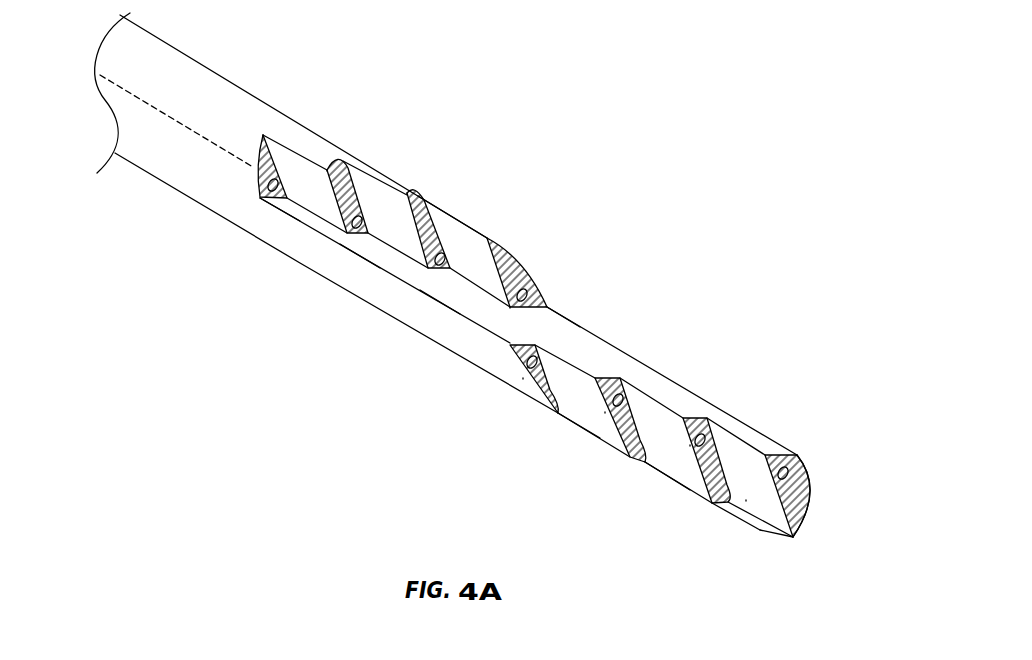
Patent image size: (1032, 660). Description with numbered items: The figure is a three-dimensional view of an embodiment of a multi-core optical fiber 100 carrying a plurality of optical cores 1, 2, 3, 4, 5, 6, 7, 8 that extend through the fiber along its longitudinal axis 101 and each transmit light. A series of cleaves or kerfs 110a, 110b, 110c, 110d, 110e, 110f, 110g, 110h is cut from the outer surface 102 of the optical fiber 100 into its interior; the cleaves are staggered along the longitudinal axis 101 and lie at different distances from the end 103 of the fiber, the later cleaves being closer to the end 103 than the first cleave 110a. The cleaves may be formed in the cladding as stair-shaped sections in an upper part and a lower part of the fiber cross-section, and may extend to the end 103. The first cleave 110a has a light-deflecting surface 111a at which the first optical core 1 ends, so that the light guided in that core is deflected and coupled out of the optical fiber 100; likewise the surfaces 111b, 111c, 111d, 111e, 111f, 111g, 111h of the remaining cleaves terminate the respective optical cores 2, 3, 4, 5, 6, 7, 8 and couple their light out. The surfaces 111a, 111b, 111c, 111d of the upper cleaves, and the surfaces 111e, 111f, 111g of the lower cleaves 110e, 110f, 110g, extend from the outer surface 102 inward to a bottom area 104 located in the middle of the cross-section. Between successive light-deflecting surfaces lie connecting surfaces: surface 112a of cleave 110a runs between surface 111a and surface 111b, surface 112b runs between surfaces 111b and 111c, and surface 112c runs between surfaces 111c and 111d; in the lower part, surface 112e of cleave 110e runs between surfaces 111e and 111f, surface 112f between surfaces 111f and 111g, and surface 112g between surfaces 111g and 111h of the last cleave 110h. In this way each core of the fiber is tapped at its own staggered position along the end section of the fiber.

The multi-core optical fiber 100 is at (264, 88).
The longitudinal axis 101 is at (135, 97).
The outer surface 102 is at (199, 62).
The end of the optical fiber 103 is at (807, 507).
The bottom area 104 is at (305, 220).
The first cleave 110a is at (260, 199).
The second cleave 110b is at (380, 242).
The cleave 110c is at (455, 330).
The cleave 110d is at (553, 317).
The cleave 110e is at (565, 420).
The cleave 110f is at (663, 465).
The cleave 110g is at (740, 505).
The cleave 110h is at (802, 532).
The light-deflecting surface 111a is at (258, 172).
The light-deflecting surface 111b is at (335, 165).
The light-deflecting surface 111c is at (432, 200).
The light-deflecting surface 111d is at (535, 285).
The light-deflecting surface 111e is at (527, 370).
The light-deflecting surface 111f is at (623, 458).
The light-deflecting surface 111g is at (703, 495).
The light-deflecting surface 111h is at (802, 488).
The surface of the cleave 112a is at (300, 167).
The surface of the cleave 112b is at (388, 203).
The surface of the cleave 112c is at (472, 238).
The surface of the cleave 112e is at (577, 380).
The surface of the cleave 112f is at (663, 417).
The surface of the cleave 112g is at (742, 460).
The first optical core 1 is at (258, 190).
The second optical core 2 is at (338, 245).
The optical core 3 is at (428, 280).
The optical core 4 is at (508, 308).
The optical core 5 is at (523, 380).
The optical core 6 is at (605, 412).
The optical core 7 is at (690, 447).
The optical core 8 is at (746, 502).